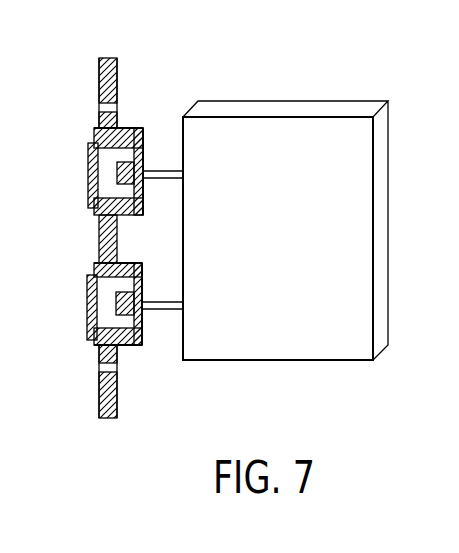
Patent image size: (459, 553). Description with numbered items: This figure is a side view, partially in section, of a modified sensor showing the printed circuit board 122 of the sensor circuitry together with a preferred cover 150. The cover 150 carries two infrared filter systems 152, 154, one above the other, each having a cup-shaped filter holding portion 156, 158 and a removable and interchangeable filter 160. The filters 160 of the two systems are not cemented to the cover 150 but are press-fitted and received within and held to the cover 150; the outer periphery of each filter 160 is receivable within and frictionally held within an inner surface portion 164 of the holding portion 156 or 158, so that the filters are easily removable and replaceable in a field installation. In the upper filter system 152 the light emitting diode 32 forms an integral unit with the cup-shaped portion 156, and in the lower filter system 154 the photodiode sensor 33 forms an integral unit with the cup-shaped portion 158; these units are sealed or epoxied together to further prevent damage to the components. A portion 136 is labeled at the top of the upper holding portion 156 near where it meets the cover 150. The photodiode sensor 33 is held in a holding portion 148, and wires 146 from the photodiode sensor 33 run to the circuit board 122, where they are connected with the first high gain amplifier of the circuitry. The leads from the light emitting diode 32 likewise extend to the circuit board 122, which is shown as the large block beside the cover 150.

The circuit board 122 is at (281, 124).
The cover 150 is at (104, 58).
The infrared filter system 152 is at (89, 150).
The infrared filter system 154 is at (86, 298).
The flange 136 is at (128, 130).
The cup-shaped filter holding portion 156 is at (139, 130).
The cup-shaped filter holding portion 158 is at (133, 262).
The filter 160 is at (89, 170).
The light emitting diode 32 is at (118, 172).
The photodiode sensor 33 is at (117, 306).
The wires 146 is at (155, 301).
The holding portion 148 is at (143, 343).
The inner surface portion 164 is at (97, 341).